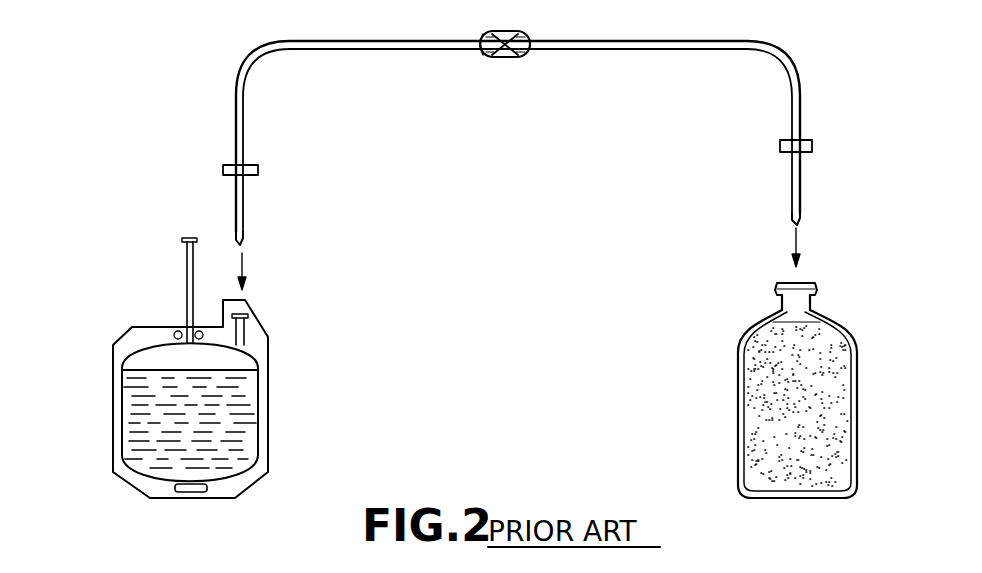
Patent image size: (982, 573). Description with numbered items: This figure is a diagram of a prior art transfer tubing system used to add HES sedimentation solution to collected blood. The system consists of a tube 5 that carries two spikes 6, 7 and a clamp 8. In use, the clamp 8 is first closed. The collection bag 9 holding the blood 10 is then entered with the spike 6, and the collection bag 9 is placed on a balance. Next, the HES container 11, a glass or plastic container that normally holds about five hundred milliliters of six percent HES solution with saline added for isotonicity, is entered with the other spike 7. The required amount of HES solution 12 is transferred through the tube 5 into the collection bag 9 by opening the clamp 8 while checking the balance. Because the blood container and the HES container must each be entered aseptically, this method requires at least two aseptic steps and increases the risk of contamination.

The tube 5 is at (355, 49).
The spike 6 is at (246, 198).
The spike 7 is at (790, 178).
The clamp 8 is at (511, 58).
The collection bag 9 is at (257, 330).
The blood 10 is at (232, 408).
The HES container 11 is at (798, 309).
The HES solution 12 is at (768, 372).